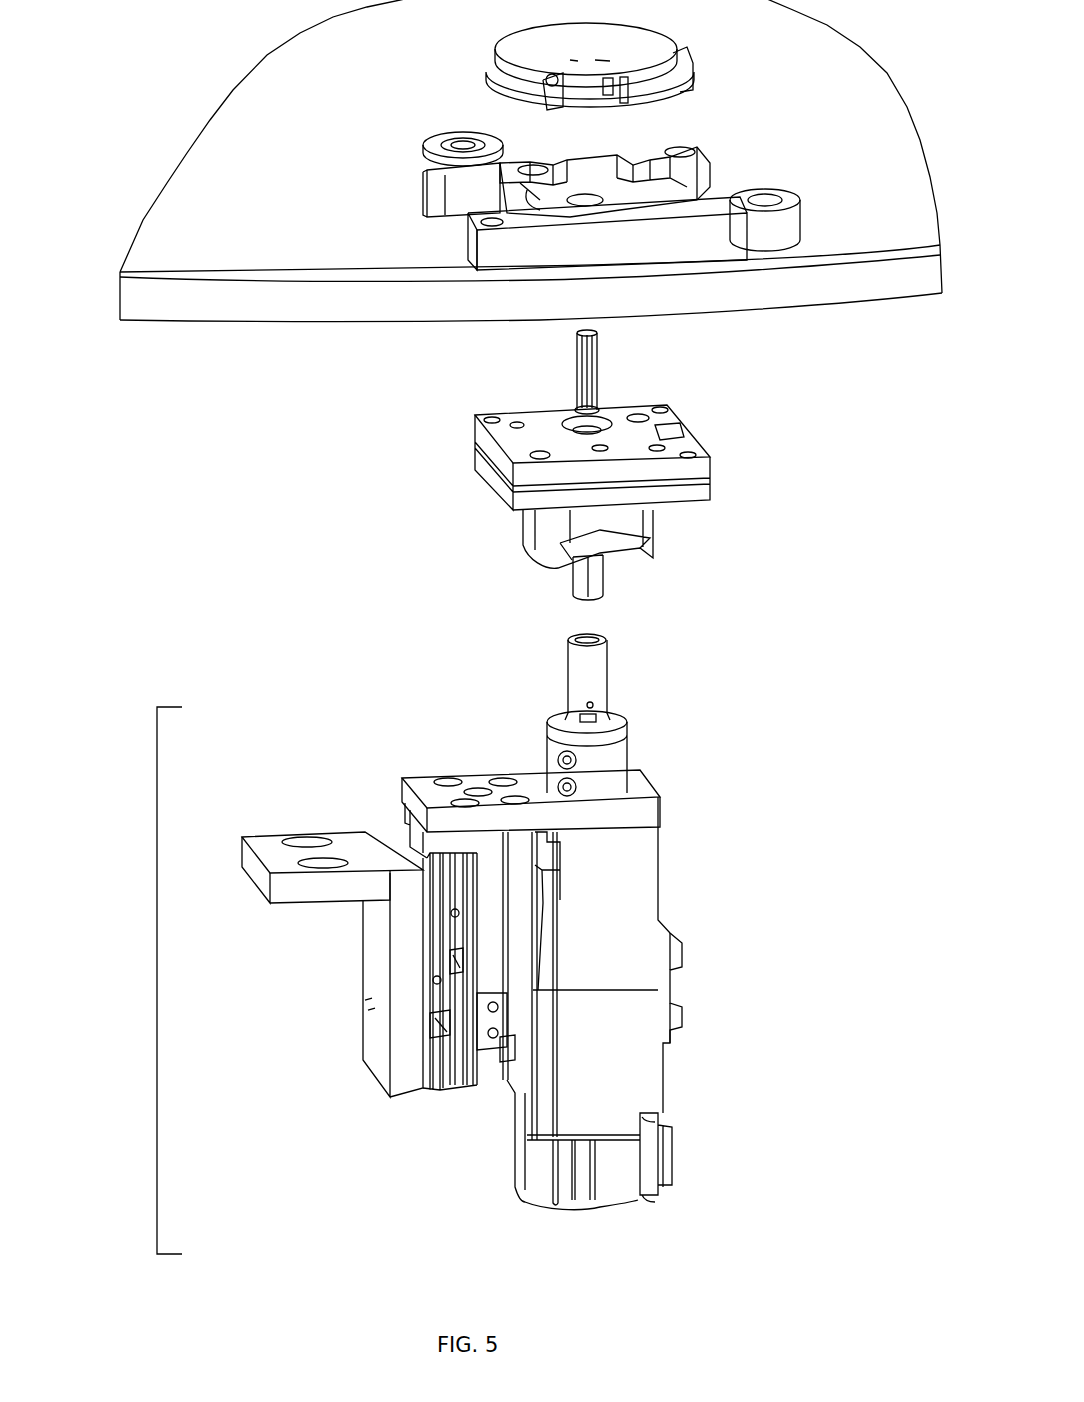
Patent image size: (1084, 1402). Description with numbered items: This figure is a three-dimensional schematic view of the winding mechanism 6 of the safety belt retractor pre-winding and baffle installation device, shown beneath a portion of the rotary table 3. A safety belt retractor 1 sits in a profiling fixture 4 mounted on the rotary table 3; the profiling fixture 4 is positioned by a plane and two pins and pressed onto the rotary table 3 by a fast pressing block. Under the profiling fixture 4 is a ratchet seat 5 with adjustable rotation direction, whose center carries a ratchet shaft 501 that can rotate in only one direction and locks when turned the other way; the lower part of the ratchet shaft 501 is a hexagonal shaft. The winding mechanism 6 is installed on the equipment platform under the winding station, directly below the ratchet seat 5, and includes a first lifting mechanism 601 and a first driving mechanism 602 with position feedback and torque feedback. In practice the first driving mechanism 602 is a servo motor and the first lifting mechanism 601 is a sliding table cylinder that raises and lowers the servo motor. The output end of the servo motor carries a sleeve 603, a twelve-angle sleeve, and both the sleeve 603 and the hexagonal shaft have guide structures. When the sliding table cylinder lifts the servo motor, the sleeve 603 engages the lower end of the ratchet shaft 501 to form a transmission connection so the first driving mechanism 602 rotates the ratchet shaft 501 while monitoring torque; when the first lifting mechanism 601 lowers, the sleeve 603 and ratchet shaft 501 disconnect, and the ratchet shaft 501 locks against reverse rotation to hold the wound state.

The safety belt retractor 1 is at (642, 65).
The rotary table 3 is at (237, 242).
The profiling fixture 4 is at (680, 236).
The ratchet seat 5 is at (451, 497).
The ratchet shaft 501 is at (573, 589).
The winding mechanism 6 is at (156, 948).
The first lifting mechanism 601 is at (422, 958).
The first driving mechanism 602 is at (598, 1026).
The sleeve 603 is at (587, 662).